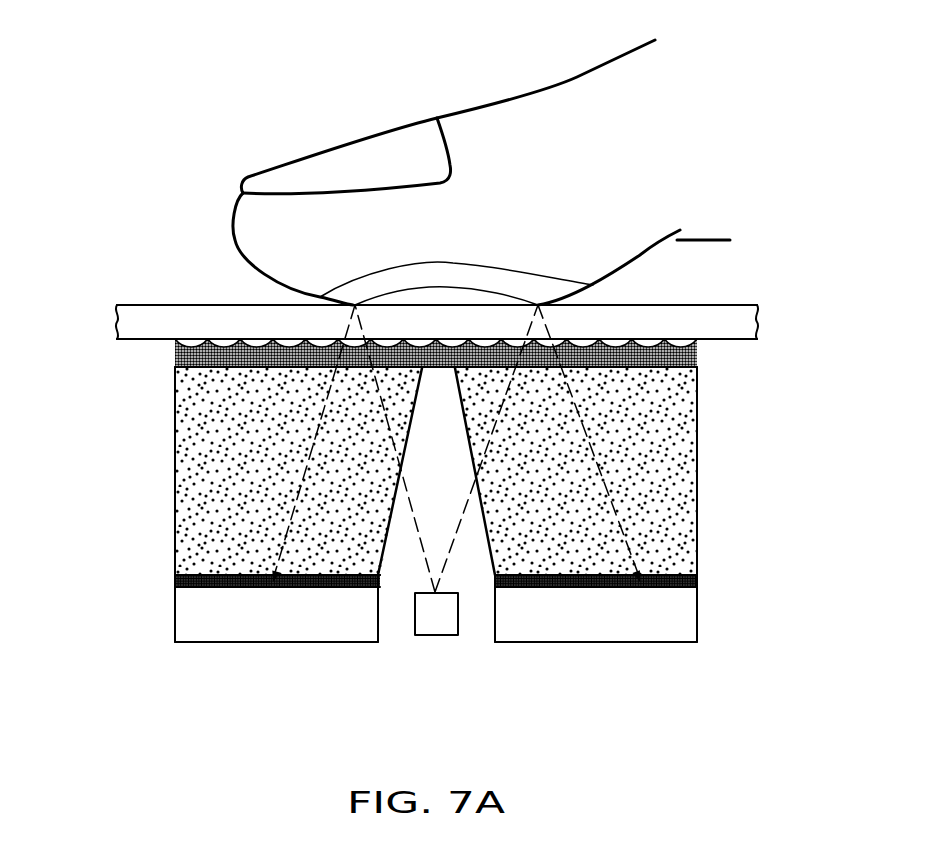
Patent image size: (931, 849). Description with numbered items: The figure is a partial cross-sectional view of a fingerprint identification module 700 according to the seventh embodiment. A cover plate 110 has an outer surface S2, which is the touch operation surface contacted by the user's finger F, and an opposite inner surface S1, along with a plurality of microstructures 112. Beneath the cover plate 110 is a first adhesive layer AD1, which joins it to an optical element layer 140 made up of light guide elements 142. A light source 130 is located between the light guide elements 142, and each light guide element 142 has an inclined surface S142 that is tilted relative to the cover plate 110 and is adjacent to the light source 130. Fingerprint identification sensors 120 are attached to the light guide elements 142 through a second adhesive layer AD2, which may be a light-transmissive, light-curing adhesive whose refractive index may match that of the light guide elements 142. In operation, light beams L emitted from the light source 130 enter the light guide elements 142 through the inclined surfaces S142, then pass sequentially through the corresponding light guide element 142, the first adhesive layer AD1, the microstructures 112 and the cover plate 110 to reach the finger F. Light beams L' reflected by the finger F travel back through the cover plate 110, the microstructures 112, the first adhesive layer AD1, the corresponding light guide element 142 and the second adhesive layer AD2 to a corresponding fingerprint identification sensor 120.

The finger F is at (538, 85).
The microstructures 112 is at (202, 348).
The outer surface S2 is at (734, 306).
The cover plate 110 is at (758, 322).
The inner surface S1 is at (734, 339).
The first adhesive layer AD1 is at (176, 362).
The light beams L is at (446, 448).
The reflected light beams L' is at (452, 443).
The light guide elements 142 is at (190, 492).
The optical element layer 140 is at (437, 504).
The second adhesive layer AD2 is at (176, 582).
The fingerprint identification sensors 120 is at (190, 617).
The inclined surface S142 is at (387, 542).
The light source 130 is at (437, 636).
The fingerprint identification module 700 is at (797, 713).